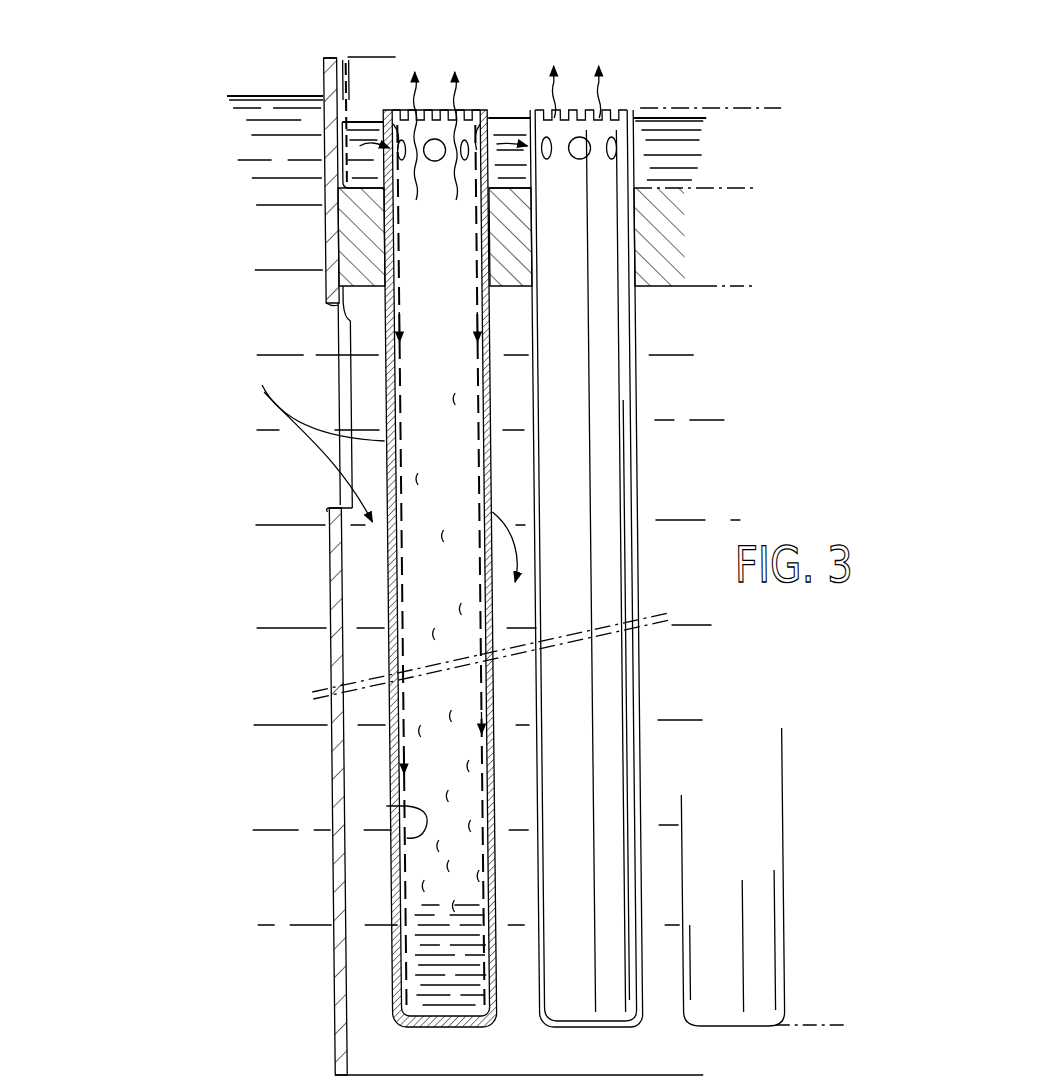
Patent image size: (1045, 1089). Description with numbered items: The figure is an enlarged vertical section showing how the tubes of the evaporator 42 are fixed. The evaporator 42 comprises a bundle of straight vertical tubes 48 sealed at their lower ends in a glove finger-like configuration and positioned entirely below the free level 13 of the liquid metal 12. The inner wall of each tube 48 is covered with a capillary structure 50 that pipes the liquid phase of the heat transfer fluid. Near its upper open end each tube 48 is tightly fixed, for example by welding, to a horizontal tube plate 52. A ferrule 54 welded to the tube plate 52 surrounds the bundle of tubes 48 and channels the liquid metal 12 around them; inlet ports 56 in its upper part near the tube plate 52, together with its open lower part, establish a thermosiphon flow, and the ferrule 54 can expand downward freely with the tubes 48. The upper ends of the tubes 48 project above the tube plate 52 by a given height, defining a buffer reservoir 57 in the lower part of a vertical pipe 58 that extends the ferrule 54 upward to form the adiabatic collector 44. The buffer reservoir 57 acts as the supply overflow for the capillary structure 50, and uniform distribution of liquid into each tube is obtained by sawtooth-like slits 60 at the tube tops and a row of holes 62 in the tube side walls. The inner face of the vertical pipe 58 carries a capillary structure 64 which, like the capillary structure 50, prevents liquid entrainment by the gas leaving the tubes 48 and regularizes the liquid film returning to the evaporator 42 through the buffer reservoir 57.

The liquid metal 12 is at (282, 327).
The free level 13 is at (266, 96).
The evaporator 42 is at (320, 733).
The adiabatic collector 44 is at (320, 39).
The tubes 48 is at (547, 990).
The capillary structure 50 is at (378, 806).
The tube plate 52 is at (652, 262).
The ferrule 54 is at (337, 606).
The inlet ports 56 is at (342, 487).
The buffer reservoir 57 is at (670, 142).
The vertical pipe 58 is at (331, 176).
The sawtooth-like slits 60 is at (468, 106).
The holes 62 is at (436, 162).
The capillary structure 64 is at (357, 57).